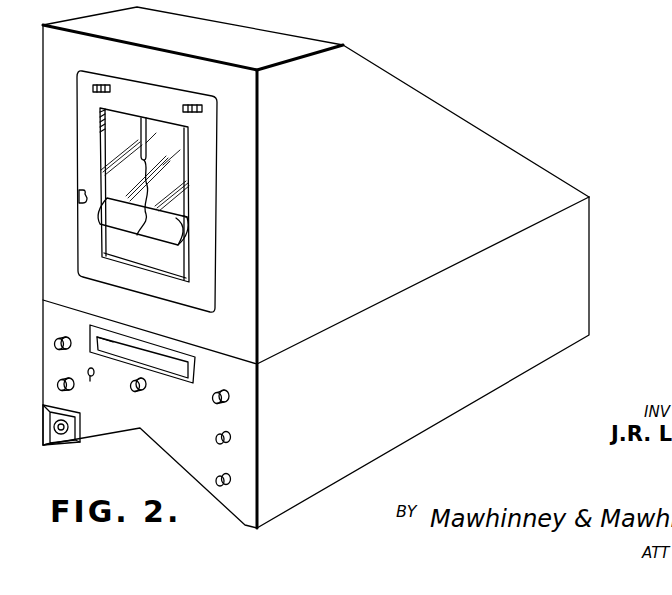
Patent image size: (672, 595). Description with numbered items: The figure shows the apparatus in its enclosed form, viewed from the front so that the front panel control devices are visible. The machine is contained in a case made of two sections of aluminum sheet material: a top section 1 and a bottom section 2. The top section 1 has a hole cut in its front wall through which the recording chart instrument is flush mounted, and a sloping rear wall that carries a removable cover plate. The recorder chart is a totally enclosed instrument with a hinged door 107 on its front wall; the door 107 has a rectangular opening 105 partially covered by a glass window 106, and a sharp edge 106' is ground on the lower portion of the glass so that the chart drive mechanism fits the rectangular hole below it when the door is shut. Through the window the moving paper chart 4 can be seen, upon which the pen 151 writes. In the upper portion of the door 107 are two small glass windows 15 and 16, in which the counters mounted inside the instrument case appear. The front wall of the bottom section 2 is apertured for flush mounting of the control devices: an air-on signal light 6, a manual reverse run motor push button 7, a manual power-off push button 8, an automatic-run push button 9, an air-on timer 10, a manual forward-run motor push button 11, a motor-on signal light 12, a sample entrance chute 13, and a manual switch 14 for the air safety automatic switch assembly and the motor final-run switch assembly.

The top section 1 is at (524, 170).
The bottom section 2 is at (570, 290).
The recording chart 4 is at (112, 217).
The air-on signal light 6 is at (231, 398).
The manual reverse run motor push button 7 is at (232, 437).
The manual power-off push button 8 is at (232, 479).
The automatic-run push button 9 is at (145, 390).
The air-on timer 10 is at (48, 420).
The manual forward-run motor push button 11 is at (56, 385).
The motor-on signal light 12 is at (53, 344).
The sample entrance chute 13 is at (167, 360).
The manual switch 14 is at (90, 381).
The glass window 15 is at (107, 85).
The glass window 16 is at (200, 104).
The rectangular opening 105 is at (192, 268).
The glass window 106 is at (198, 172).
The sharp edge 106' is at (221, 236).
The hinged door 107 is at (80, 243).
The pen 151 is at (147, 143).